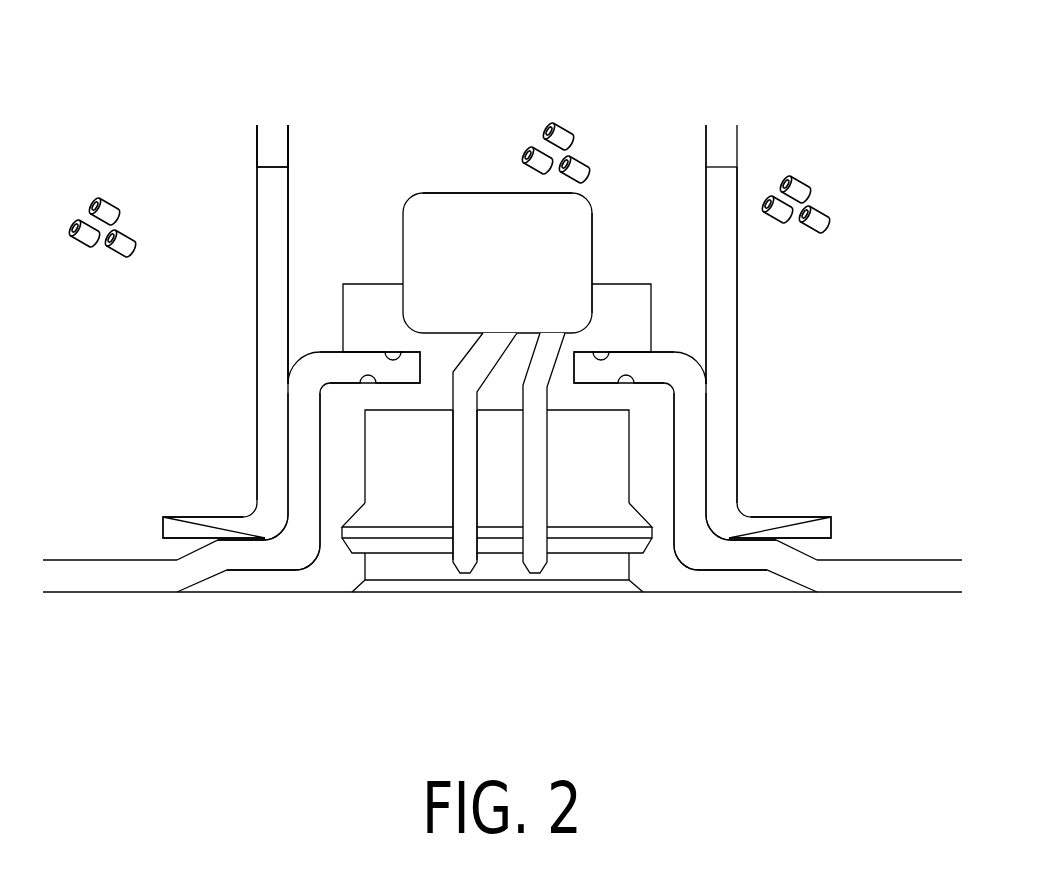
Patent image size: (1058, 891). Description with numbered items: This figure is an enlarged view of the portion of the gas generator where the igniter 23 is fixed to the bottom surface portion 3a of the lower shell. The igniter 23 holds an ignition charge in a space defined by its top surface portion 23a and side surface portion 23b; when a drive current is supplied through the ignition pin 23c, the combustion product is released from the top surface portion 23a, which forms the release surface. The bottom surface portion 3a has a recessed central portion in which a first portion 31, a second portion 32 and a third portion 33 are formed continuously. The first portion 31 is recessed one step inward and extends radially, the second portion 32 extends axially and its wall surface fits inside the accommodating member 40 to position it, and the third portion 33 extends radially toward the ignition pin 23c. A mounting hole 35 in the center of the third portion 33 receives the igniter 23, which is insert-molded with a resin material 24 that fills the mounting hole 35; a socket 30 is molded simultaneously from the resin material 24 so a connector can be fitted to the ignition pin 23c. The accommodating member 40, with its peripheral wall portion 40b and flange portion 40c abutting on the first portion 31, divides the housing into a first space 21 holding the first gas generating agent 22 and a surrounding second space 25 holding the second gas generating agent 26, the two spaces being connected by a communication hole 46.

The bottom surface portion 3a is at (93, 573).
The first space 21 is at (325, 166).
The first gas generating agent 22 is at (557, 125).
The igniter 23 is at (487, 255).
The top surface portion 23a is at (470, 193).
The side surface portion 23b is at (593, 250).
The ignition pin 23c is at (462, 557).
The resin material 24 is at (312, 573).
The second space 25 is at (120, 398).
The second gas generating agent 26 is at (95, 198).
The socket 30 is at (578, 565).
The first portion 31 is at (250, 552).
The second portion 32 is at (308, 443).
The third portion 33 is at (338, 363).
The mounting hole 35 is at (440, 372).
The accommodating member 40 is at (222, 262).
The peripheral wall portion 40b is at (732, 292).
The flange portion 40c is at (193, 530).
The communication hole 46 is at (270, 143).